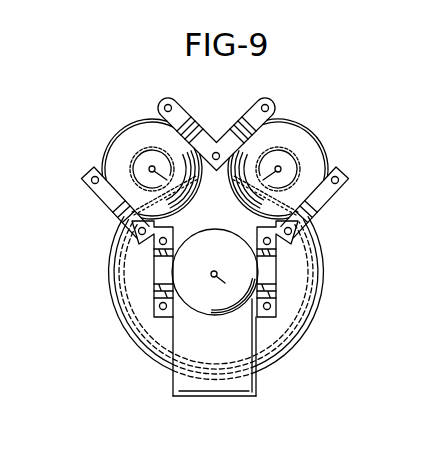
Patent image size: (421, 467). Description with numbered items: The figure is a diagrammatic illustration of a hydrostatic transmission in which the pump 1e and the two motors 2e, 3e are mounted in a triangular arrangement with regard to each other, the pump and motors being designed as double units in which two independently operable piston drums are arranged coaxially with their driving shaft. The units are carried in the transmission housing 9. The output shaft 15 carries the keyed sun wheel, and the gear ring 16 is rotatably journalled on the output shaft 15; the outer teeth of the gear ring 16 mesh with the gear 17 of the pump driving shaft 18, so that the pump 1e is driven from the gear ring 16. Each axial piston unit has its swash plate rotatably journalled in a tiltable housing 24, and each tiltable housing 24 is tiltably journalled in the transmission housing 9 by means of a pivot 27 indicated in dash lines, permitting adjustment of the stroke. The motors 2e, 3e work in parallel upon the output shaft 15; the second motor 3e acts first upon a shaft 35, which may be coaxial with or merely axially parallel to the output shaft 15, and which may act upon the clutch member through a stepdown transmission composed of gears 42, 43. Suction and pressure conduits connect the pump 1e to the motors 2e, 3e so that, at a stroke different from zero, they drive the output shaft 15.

The pump 1e is at (105, 159).
The first motor 2e is at (219, 323).
The second motor 3e is at (333, 160).
The transmission housing 9 is at (109, 274).
The output shaft 15 is at (216, 273).
The gear ring 16 is at (320, 279).
The stepdown transmission gear 43 is at (216, 294).
The gear 17 is at (152, 113).
The pump driving shaft 18 is at (120, 130).
The tiltable housing 24 is at (100, 200).
The pivot 27 is at (212, 136).
The shaft 35 is at (305, 174).
The stepdown transmission gear 42 is at (326, 143).